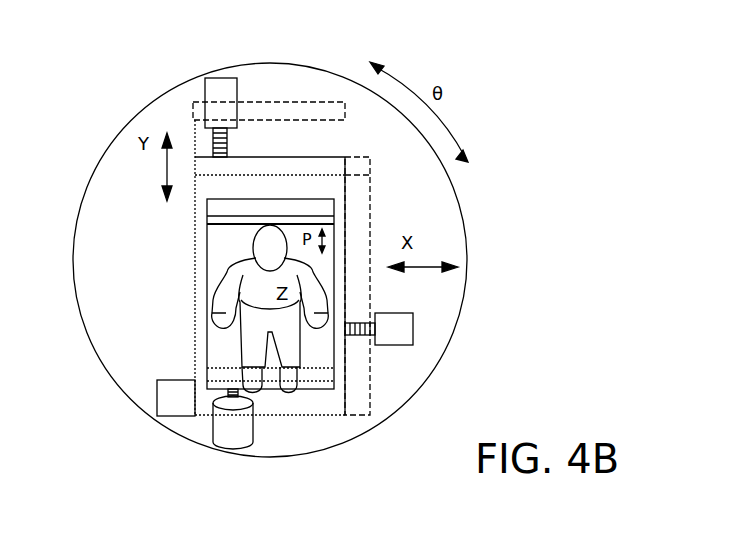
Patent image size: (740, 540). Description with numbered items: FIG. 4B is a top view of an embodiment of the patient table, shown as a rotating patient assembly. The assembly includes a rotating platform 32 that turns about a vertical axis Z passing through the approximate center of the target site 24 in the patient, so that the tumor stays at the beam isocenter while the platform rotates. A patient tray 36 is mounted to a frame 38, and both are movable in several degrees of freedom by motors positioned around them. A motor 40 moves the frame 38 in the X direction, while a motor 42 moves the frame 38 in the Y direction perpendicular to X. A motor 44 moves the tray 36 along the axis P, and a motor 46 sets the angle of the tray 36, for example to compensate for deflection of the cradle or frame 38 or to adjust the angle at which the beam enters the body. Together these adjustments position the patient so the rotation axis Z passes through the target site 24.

The target site 24 is at (266, 291).
The rotating platform 32 is at (425, 197).
The patient tray 36 is at (217, 210).
The frame 38 is at (298, 167).
The motor 40 is at (400, 327).
The motor 42 is at (222, 88).
The motor 44 is at (228, 432).
The motor 46 is at (175, 398).